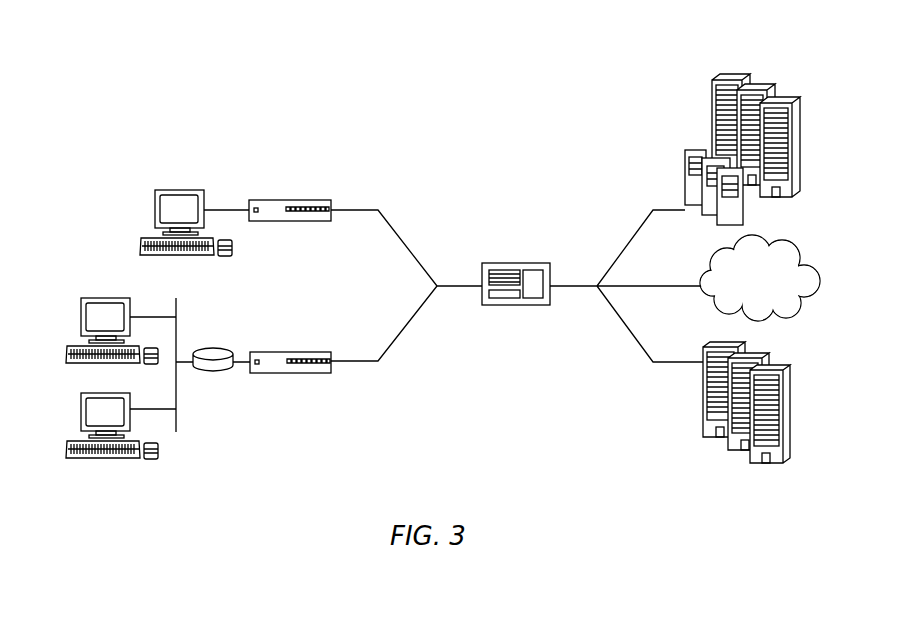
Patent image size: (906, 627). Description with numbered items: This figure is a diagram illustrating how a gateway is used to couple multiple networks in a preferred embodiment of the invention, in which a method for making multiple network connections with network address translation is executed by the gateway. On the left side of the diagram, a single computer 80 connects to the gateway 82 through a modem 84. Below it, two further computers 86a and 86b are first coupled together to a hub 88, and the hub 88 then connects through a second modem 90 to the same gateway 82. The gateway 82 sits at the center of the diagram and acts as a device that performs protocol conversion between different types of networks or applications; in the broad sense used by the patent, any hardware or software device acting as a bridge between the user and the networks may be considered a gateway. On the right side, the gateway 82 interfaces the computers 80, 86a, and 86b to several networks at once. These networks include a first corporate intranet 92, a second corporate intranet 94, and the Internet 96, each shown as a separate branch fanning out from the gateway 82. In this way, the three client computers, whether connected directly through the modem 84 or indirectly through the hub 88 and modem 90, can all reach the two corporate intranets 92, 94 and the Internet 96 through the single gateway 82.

The computer 80 is at (177, 190).
The gateway 82 is at (520, 263).
The modem 84 is at (290, 200).
The computer 86a is at (103, 298).
The computer 86b is at (105, 458).
The hub 88 is at (210, 348).
The modem 90 is at (292, 352).
The first corporate intranet 92 is at (758, 90).
The second corporate intranet 94 is at (778, 372).
The Internet 96 is at (795, 252).